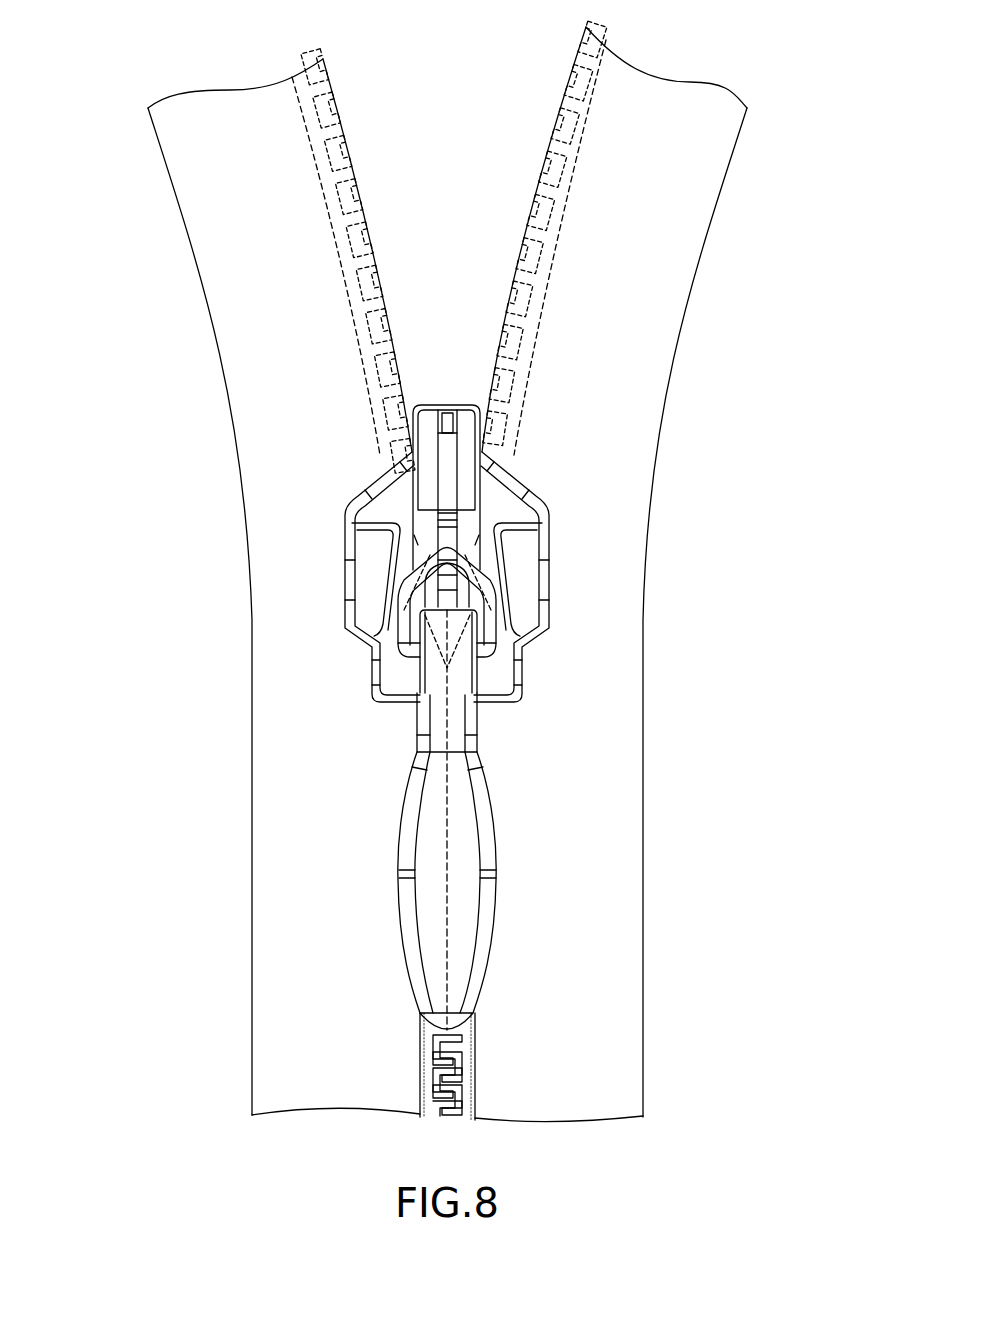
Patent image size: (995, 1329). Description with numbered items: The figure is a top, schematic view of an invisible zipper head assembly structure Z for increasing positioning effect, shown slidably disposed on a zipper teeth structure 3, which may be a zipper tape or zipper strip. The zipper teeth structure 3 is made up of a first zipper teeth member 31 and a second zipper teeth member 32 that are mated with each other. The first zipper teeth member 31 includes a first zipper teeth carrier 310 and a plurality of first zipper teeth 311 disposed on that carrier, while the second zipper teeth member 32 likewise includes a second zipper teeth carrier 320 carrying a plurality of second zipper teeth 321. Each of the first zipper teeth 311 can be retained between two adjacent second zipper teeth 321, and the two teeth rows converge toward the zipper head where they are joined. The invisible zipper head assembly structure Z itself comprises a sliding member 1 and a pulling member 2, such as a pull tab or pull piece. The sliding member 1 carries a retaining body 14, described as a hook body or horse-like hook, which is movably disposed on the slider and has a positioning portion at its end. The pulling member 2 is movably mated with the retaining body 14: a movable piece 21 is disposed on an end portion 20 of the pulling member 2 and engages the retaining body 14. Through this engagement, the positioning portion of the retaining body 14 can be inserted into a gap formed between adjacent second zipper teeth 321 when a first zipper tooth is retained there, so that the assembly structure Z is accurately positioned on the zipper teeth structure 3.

The sliding member 1 is at (572, 560).
The retaining body 14 is at (445, 492).
The pulling member 2 is at (510, 825).
The end portion 20 is at (437, 675).
The movable piece 21 is at (407, 617).
The zipper teeth structure 3 is at (66, 298).
The first zipper teeth member 31 is at (127, 265).
The first zipper teeth carrier 310 is at (225, 273).
The first zipper teeth 311 is at (355, 302).
The second zipper teeth member 32 is at (768, 265).
The second zipper teeth carrier 320 is at (670, 273).
The second zipper teeth 321 is at (530, 312).
The invisible zipper head assembly structure Z is at (708, 547).